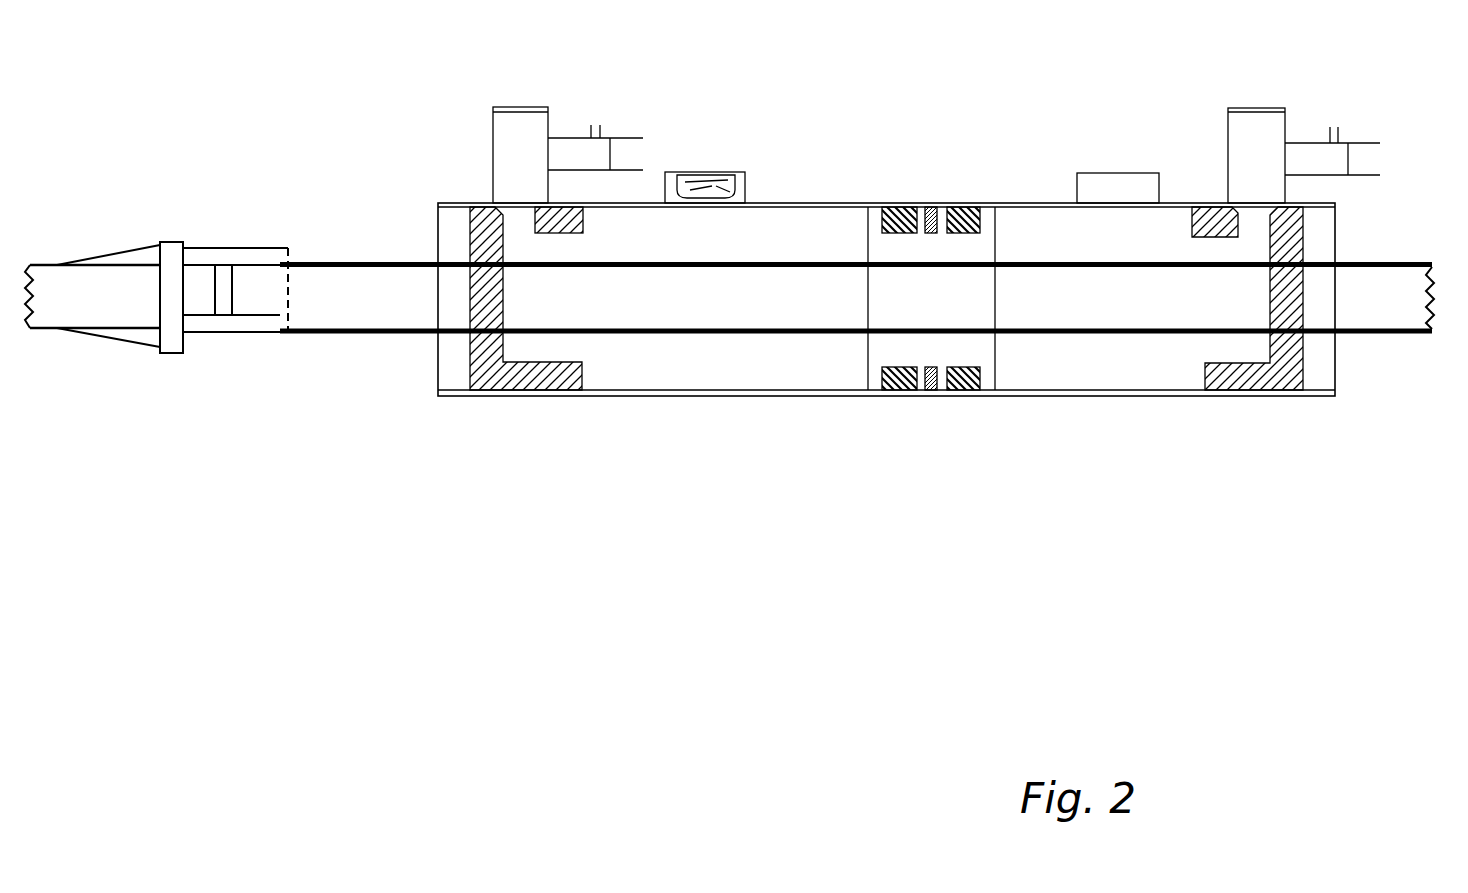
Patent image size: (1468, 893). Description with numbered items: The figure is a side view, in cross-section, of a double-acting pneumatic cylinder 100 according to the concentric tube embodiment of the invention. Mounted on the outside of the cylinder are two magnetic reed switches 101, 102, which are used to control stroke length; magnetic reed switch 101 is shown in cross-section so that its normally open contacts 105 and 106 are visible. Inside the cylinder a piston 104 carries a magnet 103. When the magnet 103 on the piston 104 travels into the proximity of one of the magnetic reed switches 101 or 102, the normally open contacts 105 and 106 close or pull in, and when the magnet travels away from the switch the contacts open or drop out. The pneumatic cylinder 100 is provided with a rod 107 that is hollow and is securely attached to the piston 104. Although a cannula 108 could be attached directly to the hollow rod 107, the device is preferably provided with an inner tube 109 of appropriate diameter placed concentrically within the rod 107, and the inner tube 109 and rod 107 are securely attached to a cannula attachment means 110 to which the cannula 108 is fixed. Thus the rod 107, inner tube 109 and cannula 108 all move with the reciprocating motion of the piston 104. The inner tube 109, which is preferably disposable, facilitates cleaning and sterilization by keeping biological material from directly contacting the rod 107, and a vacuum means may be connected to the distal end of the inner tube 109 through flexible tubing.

The double-acting pneumatic cylinder 100 is at (695, 397).
The magnetic reed switch 101 is at (705, 175).
The magnetic reed switch 102 is at (1117, 173).
The magnet 103 is at (933, 207).
The piston 104 is at (997, 367).
The normally open contact 105 is at (738, 172).
The normally open contact 106 is at (680, 172).
The rod 107 is at (1125, 333).
The cannula 108 is at (42, 265).
The inner tube 109 is at (615, 333).
The cannula attachment means 110 is at (250, 248).